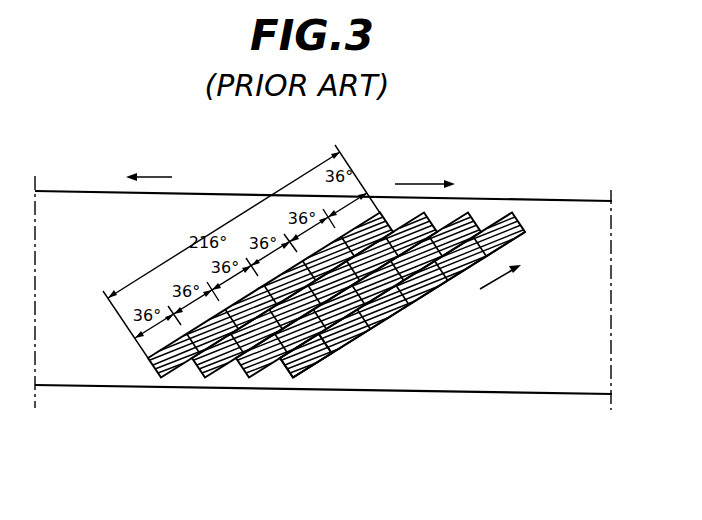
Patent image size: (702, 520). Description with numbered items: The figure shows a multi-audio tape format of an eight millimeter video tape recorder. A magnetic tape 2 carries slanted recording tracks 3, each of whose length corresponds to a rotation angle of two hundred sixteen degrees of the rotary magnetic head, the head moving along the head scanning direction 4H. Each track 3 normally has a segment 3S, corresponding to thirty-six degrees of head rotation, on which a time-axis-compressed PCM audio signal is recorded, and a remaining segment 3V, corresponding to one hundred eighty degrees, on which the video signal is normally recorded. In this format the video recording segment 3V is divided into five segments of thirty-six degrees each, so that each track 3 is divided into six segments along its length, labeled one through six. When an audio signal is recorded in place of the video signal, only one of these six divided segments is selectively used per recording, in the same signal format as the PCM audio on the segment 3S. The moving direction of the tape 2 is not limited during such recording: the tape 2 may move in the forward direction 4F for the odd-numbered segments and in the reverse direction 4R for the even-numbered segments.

The magnetic tape 2 is at (463, 393).
The recording track 3 is at (151, 362).
The segment 3S is at (322, 370).
The remaining segment 3V is at (383, 323).
The reverse direction 4R is at (154, 176).
The tape moving direction during normal recording 4F is at (404, 182).
The head scanning direction 4H is at (497, 279).